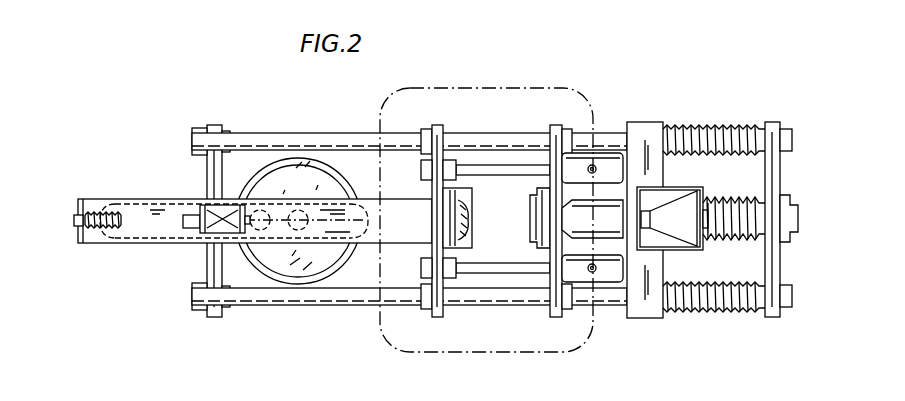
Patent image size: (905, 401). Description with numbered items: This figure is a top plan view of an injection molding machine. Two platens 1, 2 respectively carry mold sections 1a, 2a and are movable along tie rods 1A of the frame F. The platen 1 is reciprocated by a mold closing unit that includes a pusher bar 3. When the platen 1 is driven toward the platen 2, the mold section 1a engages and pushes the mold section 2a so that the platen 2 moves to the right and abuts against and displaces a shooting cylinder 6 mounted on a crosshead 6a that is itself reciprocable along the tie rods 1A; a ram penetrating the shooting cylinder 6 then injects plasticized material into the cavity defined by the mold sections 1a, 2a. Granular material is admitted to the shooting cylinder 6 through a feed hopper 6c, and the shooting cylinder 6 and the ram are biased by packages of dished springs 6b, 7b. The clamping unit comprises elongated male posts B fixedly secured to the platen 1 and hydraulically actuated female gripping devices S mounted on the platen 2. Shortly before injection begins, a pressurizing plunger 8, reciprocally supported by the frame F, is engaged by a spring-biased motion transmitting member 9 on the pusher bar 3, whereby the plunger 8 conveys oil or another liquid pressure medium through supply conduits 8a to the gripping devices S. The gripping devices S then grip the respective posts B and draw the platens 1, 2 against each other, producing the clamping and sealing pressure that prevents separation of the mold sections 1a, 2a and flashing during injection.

The tie rods 1A is at (276, 133).
The pusher bar 3 is at (150, 199).
The spring-biased motion transmitting member 9 is at (120, 212).
The pressurizing plunger 8 is at (189, 214).
The platen 1 is at (432, 126).
The post B is at (490, 165).
The platen 2 is at (556, 125).
The gripping device S is at (607, 160).
The package of dished springs 6b is at (690, 125).
The frame F is at (790, 161).
The feed hopper 6c is at (678, 188).
The package of dished springs 7b is at (725, 197).
The mold section 2a is at (532, 190).
The mold section 1a is at (472, 240).
The shooting cylinder 6 is at (608, 231).
The crosshead 6a is at (645, 317).
The supply conduits 8a is at (521, 88).